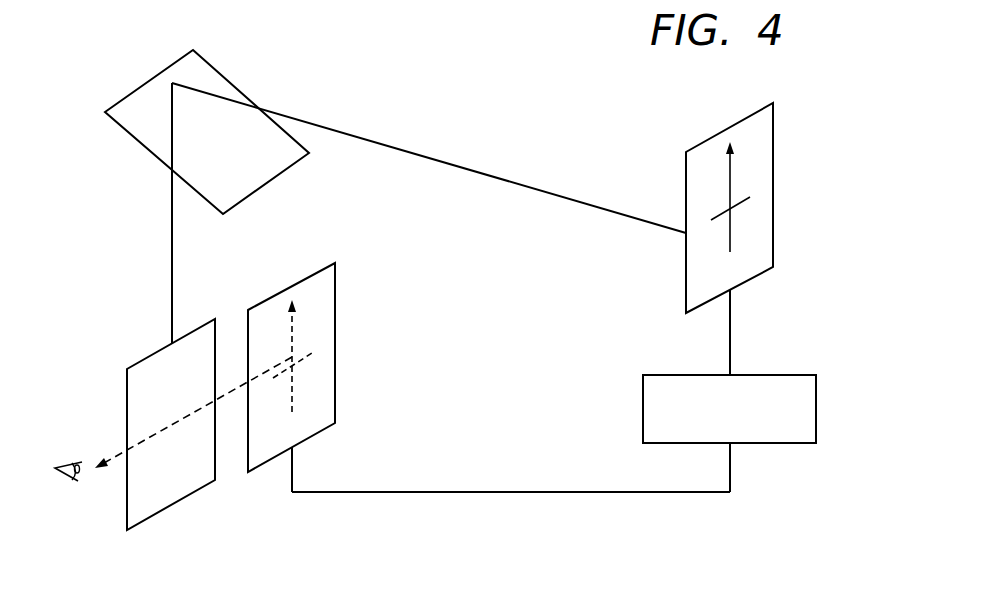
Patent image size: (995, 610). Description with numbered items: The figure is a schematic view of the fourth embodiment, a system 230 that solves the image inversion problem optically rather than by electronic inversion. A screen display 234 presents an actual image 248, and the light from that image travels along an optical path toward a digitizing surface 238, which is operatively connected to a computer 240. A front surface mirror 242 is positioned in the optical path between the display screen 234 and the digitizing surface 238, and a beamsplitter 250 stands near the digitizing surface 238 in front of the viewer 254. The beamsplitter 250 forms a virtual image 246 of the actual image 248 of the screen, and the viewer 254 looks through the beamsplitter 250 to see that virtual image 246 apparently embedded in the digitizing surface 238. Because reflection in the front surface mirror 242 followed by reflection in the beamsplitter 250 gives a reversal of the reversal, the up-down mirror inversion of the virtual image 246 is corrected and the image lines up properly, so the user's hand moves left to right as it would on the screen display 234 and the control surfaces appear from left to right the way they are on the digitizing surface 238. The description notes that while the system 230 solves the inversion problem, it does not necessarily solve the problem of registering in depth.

The system 230 is at (516, 124).
The front surface mirror 242 is at (262, 185).
The screen display 234 is at (773, 248).
The actual image 248 is at (727, 232).
The computer 240 is at (779, 445).
The digitizing surface 238 is at (335, 297).
The virtual image 246 is at (292, 388).
The beamsplitter 250 is at (150, 355).
The viewer 254 is at (68, 473).